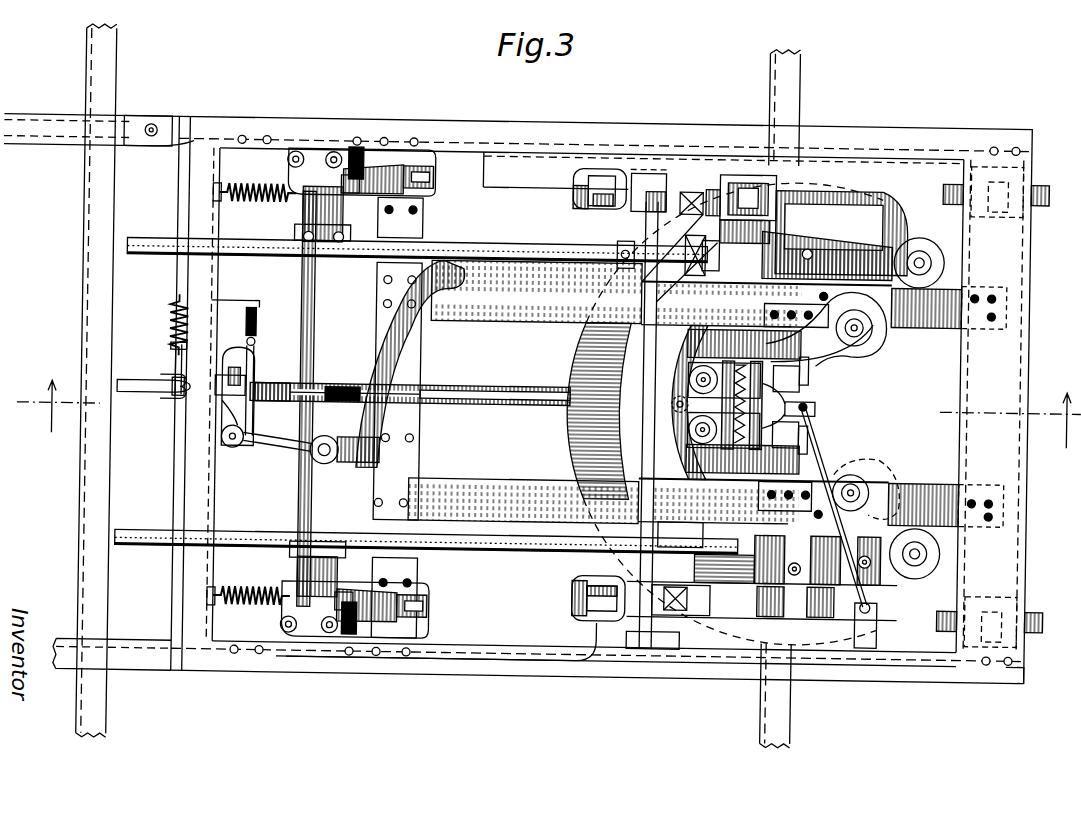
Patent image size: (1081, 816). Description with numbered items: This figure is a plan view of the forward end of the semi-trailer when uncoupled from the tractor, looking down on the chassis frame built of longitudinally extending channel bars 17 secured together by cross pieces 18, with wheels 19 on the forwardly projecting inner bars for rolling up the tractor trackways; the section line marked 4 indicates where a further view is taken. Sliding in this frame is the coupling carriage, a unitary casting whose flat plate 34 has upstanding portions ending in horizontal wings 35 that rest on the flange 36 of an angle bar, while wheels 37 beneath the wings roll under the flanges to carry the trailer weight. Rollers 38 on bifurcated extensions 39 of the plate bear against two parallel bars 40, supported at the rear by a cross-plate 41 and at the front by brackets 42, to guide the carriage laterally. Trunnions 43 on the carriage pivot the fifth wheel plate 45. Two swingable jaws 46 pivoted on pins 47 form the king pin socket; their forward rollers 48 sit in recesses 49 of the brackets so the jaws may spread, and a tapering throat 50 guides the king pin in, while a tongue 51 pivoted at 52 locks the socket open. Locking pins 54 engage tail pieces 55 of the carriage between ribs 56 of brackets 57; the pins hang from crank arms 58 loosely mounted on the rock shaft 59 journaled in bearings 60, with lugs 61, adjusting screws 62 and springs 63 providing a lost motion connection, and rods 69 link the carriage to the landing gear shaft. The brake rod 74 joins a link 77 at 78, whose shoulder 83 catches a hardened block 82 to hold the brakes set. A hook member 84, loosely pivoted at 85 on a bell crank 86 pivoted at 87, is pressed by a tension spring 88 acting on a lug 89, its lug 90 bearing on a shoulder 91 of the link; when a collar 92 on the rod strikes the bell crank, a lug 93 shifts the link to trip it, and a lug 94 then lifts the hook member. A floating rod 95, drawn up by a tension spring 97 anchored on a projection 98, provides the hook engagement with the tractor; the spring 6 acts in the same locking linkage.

The section line 4- 4 is at (548, 423).
The spring 6 is at (225, 606).
The channel bars 17 is at (528, 133).
The cross pieces 18 is at (195, 283).
The wheels 19 is at (1025, 680).
The carriage plate 34 is at (706, 362).
The wings 35 is at (745, 172).
The flange 36 is at (655, 170).
The wheels 37 is at (698, 215).
The rollers 38 is at (922, 242).
The bifurcated extensions 39 is at (827, 255).
The parallel bars 40 is at (500, 322).
The cross-plate 41 is at (384, 340).
The brackets 42 is at (822, 405).
The trunnions 43 is at (858, 205).
The fifth wheel plate 45 is at (844, 222).
The jaws 46 is at (850, 368).
The pins 47 is at (745, 329).
The rollers 48 is at (875, 345).
The recesses 49 is at (873, 326).
The throat 50 is at (848, 440).
The tongue 51 is at (848, 420).
The pivot 52 is at (743, 463).
The locking pins 54 is at (432, 178).
The tail pieces 55 is at (618, 210).
The ribs 56 is at (396, 152).
The bracket 57 is at (357, 148).
The crank arm 58 is at (345, 180).
The rock shaft 59 is at (300, 284).
The bearings 60 is at (300, 622).
The lugs 61 is at (292, 234).
The adjusting screws 62 is at (322, 250).
The springs 63 is at (225, 197).
The rods 69 is at (484, 246).
The brake rod 74 is at (153, 395).
The link 77 is at (254, 392).
The connection 78 is at (175, 400).
The block 82 is at (182, 347).
The shoulder 83 is at (212, 380).
The hook member 84 is at (226, 406).
The pivot 85 is at (236, 452).
The bell crank 86 is at (425, 410).
The pivot 87 is at (330, 467).
The tension spring 88 is at (256, 325).
The lug 89 is at (300, 457).
The lug 90 is at (255, 346).
The shoulder 91 is at (222, 392).
The collar 92 is at (615, 252).
The lug 93 is at (233, 352).
The lug 94 is at (264, 405).
The floating rod 95 is at (522, 388).
The tension spring 97 is at (398, 380).
The projection 98 is at (333, 388).